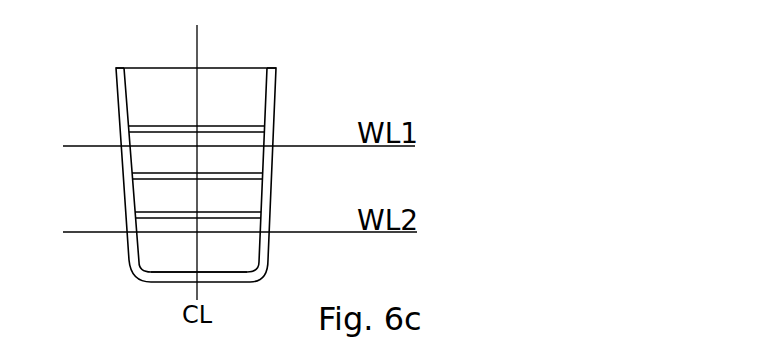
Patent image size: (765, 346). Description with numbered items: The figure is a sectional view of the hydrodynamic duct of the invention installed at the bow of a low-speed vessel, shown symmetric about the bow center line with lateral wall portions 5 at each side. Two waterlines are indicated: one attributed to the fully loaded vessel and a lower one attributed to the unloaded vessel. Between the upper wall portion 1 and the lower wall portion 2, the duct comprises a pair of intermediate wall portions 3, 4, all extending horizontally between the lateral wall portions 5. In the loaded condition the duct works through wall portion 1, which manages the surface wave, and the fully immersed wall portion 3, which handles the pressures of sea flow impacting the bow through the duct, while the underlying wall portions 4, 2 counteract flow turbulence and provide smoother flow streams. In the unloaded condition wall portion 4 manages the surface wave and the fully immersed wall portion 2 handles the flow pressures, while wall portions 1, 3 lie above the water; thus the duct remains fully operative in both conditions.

The upper wall portion 1 is at (264, 132).
The lower wall portion 2 is at (241, 280).
The intermediate wall portion 3 is at (262, 179).
The intermediate wall portion 4 is at (261, 218).
The lateral wall portion 5 is at (289, 84).